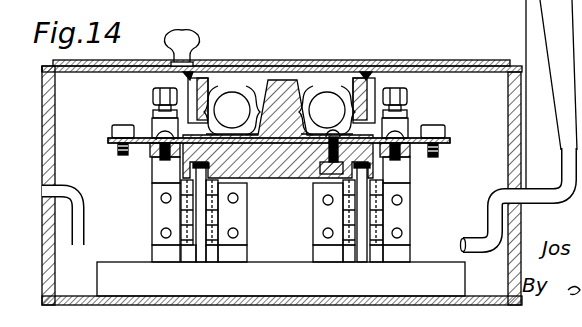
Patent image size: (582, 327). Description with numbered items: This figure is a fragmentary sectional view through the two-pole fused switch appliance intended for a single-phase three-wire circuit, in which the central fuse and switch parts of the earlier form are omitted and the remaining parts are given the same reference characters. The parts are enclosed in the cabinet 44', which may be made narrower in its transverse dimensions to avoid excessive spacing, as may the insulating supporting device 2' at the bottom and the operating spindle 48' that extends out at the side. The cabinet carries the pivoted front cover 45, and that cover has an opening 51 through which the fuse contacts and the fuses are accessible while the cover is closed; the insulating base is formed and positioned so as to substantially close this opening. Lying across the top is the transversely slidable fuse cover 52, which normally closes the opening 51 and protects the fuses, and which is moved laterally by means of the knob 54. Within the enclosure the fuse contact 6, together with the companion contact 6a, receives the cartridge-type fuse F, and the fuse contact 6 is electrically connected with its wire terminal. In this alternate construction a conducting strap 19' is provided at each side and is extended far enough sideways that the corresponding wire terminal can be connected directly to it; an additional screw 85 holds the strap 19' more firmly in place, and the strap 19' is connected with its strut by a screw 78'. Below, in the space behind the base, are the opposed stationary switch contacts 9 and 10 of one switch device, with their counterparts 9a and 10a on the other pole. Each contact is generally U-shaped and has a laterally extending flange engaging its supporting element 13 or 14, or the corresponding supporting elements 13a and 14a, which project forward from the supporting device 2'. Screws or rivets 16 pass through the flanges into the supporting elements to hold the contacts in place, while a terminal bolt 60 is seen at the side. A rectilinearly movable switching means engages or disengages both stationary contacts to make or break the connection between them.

The front cover 45 is at (43, 72).
The cabinet 44' is at (267, 185).
The knob 54 is at (192, 56).
The opening in the cover 51 is at (198, 70).
The fuse cover 52 is at (298, 62).
The fuse contact clip 6a is at (258, 87).
The fuse contact 6 is at (352, 86).
The terminal bolt 60 is at (410, 97).
The screw 78' is at (283, 126).
The conducting strap 19' is at (433, 158).
The additional screw 85 is at (322, 166).
The contact block 10a is at (158, 226).
The base block 14a is at (160, 253).
The contact block 9a is at (242, 222).
The base block 13a is at (233, 257).
The stationary switch contact 9 is at (313, 223).
The supporting element 13 is at (323, 253).
The stationary switch contact 10 is at (403, 212).
The screws or rivets 16 is at (402, 233).
The supporting element 14 is at (421, 253).
The supporting device 2' is at (281, 272).
The operating spindle 48' is at (514, 126).